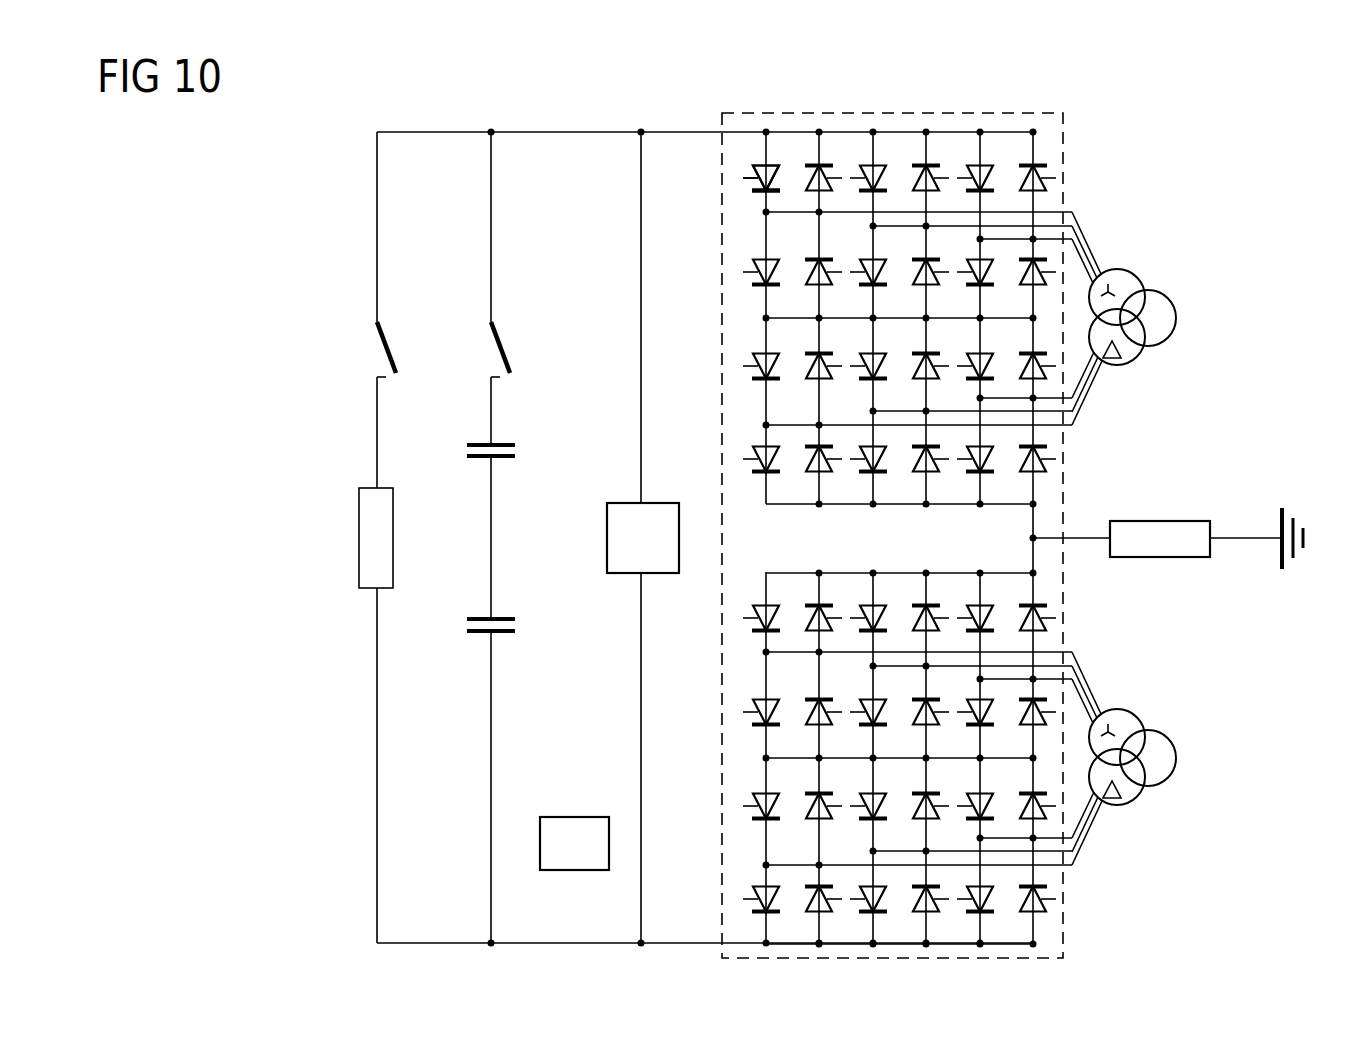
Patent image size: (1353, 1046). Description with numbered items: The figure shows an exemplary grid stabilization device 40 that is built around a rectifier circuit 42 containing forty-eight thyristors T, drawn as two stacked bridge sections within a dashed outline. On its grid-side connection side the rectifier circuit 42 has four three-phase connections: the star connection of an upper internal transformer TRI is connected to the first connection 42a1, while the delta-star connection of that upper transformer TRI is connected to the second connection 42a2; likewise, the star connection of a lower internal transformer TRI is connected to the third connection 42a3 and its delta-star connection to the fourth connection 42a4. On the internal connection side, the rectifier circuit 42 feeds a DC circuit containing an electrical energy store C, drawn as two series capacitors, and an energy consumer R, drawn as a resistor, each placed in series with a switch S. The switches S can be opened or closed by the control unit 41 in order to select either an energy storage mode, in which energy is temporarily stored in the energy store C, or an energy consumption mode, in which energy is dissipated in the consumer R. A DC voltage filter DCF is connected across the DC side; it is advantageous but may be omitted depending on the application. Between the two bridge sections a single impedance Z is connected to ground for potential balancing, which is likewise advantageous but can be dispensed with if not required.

The grid stabilization device 40 is at (334, 228).
The control unit 41 is at (590, 859).
The rectifier circuit 42 is at (869, 499).
The first connection 42a1 is at (1087, 209).
The second connection 42a2 is at (1089, 396).
The third connection 42a3 is at (1087, 649).
The fourth connection 42a4 is at (1089, 836).
The switch S is at (388, 342).
The electrical energy store C is at (503, 443).
The energy consumer R is at (393, 541).
The DC voltage filter DCF is at (668, 554).
The thyristor T is at (758, 193).
The internal transformer TRI is at (1118, 271).
The impedance Z is at (1158, 520).